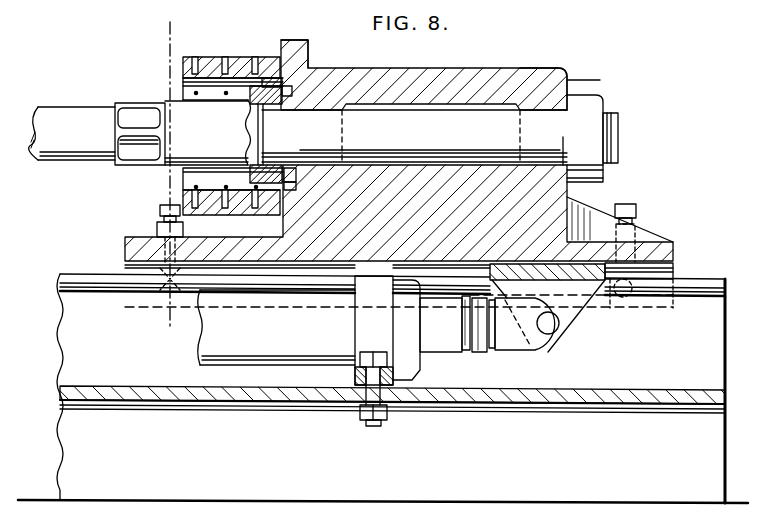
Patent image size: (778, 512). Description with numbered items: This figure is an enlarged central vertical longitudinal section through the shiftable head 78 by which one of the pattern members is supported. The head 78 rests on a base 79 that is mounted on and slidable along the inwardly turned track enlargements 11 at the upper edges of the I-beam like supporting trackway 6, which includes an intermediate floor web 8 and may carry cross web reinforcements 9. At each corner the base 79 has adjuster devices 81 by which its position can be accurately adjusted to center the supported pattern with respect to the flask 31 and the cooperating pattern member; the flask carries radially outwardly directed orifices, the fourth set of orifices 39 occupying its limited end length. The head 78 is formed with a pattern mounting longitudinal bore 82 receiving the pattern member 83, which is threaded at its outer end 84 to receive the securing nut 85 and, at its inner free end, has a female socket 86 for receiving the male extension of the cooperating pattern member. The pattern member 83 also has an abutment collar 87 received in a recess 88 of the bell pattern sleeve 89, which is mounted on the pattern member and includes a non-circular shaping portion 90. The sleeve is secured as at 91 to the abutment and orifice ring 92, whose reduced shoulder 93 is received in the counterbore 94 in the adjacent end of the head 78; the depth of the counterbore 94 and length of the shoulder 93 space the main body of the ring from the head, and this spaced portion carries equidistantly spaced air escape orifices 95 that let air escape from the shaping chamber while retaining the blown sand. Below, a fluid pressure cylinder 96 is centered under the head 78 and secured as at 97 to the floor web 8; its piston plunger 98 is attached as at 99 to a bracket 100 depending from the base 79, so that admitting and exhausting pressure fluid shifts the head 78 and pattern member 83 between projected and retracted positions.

The supporting trackway 6 is at (70, 446).
The intermediate floor web 8 is at (668, 405).
The cross web reinforcements 9 is at (161, 32).
The track enlargements 11 is at (84, 282).
The flask 31 is at (203, 57).
The fourth set of orifices 39 is at (230, 57).
The head 78 is at (555, 72).
The base 79 is at (675, 246).
The adjuster devices 81 is at (158, 210).
The pattern mounting longitudinal bore 82 is at (567, 80).
The pattern member 83 is at (48, 110).
The threaded outer end 84 is at (620, 140).
The securing nut 85 is at (605, 104).
The female socket 86 is at (334, 153).
The abutment collar 87 is at (275, 139).
The recess 88 is at (246, 122).
The bell pattern sleeve 89 is at (168, 170).
The non-circular shaping portion 90 is at (128, 118).
The securing means 91 is at (296, 76).
The abutment and orifice ring 92 is at (271, 62).
The reduced shoulder 93 is at (372, 70).
The counterbore 94 is at (286, 180).
The air escape orifices 95 is at (288, 184).
The fluid pressure cylinder 96 is at (283, 355).
The securing means 97 is at (358, 418).
The piston plunger 98 is at (497, 350).
The attachment 99 is at (552, 326).
The bracket 100 is at (578, 320).